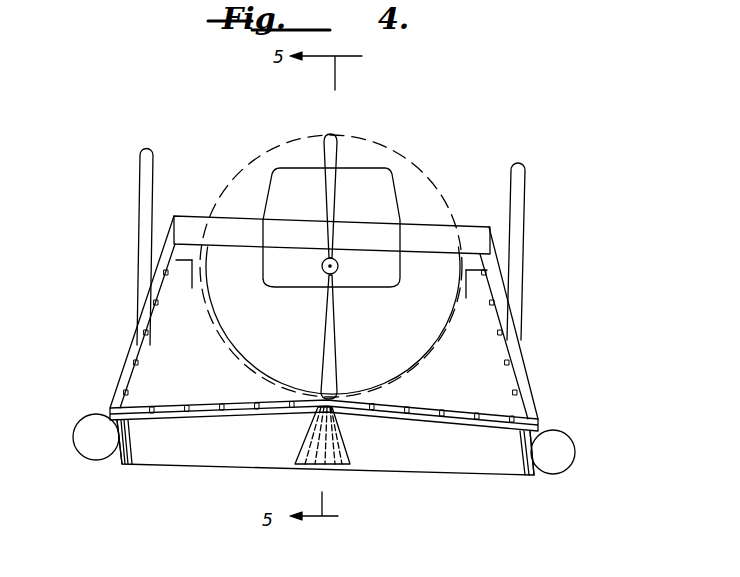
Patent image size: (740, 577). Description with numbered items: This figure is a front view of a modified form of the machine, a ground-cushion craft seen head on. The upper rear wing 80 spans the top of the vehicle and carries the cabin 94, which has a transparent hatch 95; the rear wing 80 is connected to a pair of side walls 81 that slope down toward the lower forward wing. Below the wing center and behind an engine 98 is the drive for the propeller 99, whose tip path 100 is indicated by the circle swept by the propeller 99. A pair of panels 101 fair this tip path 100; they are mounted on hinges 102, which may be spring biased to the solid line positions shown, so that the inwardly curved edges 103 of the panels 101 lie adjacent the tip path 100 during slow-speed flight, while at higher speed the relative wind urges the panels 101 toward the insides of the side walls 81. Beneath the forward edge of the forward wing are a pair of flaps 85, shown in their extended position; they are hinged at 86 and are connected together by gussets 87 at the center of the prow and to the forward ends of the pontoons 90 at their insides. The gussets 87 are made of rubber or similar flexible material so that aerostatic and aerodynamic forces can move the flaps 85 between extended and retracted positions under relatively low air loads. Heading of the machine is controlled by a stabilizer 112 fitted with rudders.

The upper rear wing 80 is at (425, 225).
The side walls 81 is at (130, 358).
The flaps 85 is at (283, 448).
The hinges 86 is at (191, 416).
The gussets 87 is at (123, 465).
The pontoons 90 is at (92, 447).
The cabin 94 is at (408, 175).
The transparent hatch 95 is at (283, 192).
The engine 98 is at (396, 272).
The propeller 99 is at (345, 139).
The tip path 100 is at (233, 352).
The panels 101 is at (197, 388).
The hinges 102 is at (160, 290).
The inwardly curved edges 103 is at (190, 313).
The stabilizer 112 is at (143, 183).